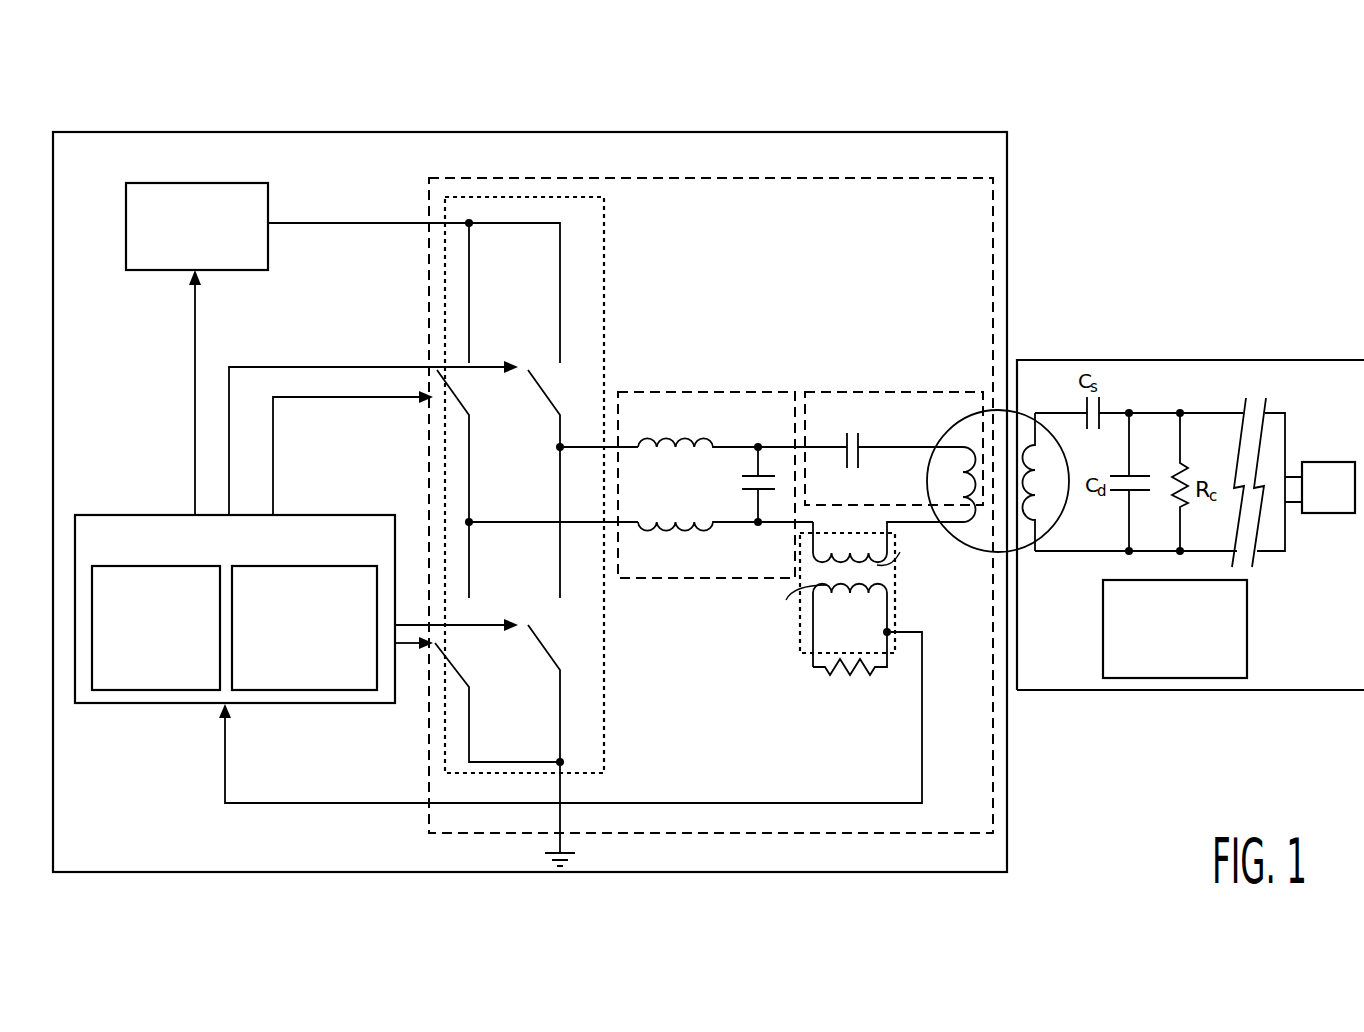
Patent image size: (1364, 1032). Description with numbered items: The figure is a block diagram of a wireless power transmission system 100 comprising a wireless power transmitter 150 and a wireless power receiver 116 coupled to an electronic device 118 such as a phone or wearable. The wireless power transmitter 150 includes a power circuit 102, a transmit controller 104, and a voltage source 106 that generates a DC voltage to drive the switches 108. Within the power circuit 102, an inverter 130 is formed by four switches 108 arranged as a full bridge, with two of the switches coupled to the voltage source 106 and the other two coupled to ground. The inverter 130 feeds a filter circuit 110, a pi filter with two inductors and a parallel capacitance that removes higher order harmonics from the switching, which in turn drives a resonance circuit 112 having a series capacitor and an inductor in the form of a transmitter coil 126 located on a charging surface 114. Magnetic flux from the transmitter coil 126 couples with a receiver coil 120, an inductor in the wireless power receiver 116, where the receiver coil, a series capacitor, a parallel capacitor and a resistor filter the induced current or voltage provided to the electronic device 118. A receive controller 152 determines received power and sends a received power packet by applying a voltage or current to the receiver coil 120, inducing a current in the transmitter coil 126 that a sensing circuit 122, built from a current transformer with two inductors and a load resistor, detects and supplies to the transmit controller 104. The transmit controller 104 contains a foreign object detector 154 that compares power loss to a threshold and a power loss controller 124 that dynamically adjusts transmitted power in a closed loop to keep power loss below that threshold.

The wireless power transmission system 100 is at (1165, 202).
The power circuit 102 is at (910, 178).
The transmit controller 104 is at (137, 515).
The voltage source 106 is at (222, 183).
The switches 108 is at (598, 696).
The filter circuit 110 is at (690, 392).
The resonance circuit 112 is at (866, 392).
The charging surface 114 is at (1007, 392).
The wireless power receiver 116 is at (1258, 340).
The electronic device 118 is at (1345, 501).
The receiver coil 120 is at (1040, 513).
The sensing circuit 122 is at (796, 657).
The power loss controller 124 is at (322, 668).
The transmitter coil 126 is at (980, 547).
The inverter 130 is at (612, 318).
The wireless power transmitter 150 is at (88, 132).
The receive controller 152 is at (1193, 670).
The foreign object detector 154 is at (173, 681).